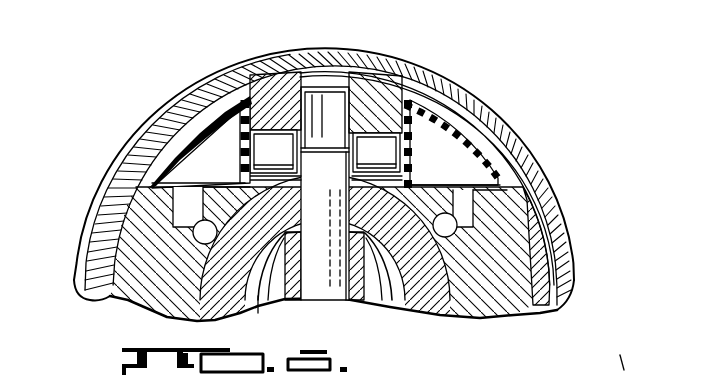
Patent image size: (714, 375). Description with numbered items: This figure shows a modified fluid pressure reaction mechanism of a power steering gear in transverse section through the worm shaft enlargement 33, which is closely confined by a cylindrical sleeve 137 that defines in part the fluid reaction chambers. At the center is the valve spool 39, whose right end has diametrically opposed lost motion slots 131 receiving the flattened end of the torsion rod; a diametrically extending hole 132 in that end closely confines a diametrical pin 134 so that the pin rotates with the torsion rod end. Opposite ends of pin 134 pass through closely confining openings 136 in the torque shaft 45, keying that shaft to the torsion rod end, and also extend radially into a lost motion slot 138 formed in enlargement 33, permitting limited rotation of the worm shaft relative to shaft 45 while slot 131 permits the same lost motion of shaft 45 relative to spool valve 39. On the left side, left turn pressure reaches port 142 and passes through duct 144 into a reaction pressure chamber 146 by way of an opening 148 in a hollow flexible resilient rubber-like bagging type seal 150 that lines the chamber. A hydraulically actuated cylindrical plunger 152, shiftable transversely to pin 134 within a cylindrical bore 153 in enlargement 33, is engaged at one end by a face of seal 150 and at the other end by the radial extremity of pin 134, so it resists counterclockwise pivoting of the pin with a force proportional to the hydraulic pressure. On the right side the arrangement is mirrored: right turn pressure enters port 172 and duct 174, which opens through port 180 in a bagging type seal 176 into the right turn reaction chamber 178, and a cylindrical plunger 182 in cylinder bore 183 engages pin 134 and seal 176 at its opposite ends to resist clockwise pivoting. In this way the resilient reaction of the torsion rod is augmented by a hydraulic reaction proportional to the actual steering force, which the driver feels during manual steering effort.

The worm shaft enlargement 33 is at (147, 262).
The valve spool 39 is at (257, 313).
The torque shaft 45 is at (266, 262).
The lost motion slot 131 is at (272, 250).
The diametrically extending hole 132 is at (340, 300).
The diametrical pin 134 is at (325, 193).
The closely confining openings 136 is at (306, 206).
The cylindrical sleeve 137 is at (510, 177).
The lost motion slot 138 is at (350, 182).
The port 142 is at (200, 230).
The duct 144 is at (150, 186).
The reaction pressure chamber 146 is at (201, 144).
The opening 148 is at (134, 158).
The bagging type seal 150 is at (184, 153).
The cylindrical plunger 152 is at (275, 155).
The cylindrical bore 153 is at (263, 132).
The port 172 is at (462, 238).
The duct 174 is at (470, 198).
The bagging type seal 176 is at (472, 96).
The right turn reaction chamber 178 is at (454, 142).
The port 180 is at (456, 145).
The cylindrical plunger 182 is at (377, 156).
The cylinder bore 183 is at (383, 128).